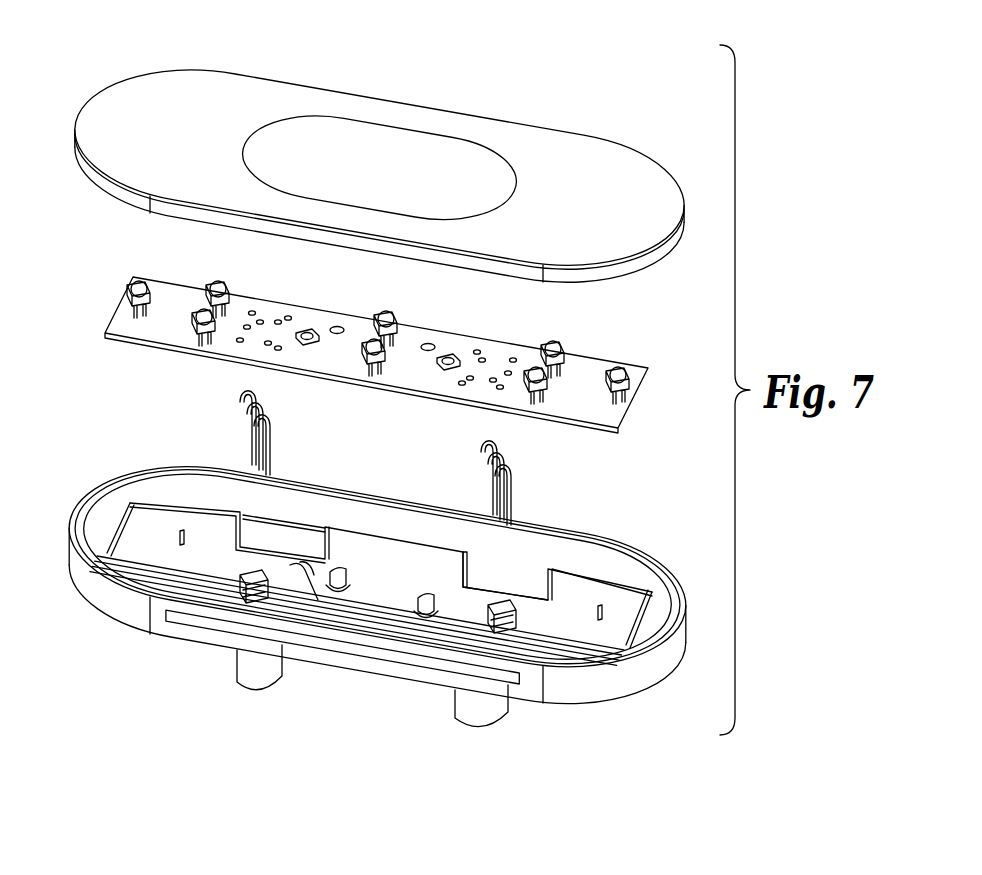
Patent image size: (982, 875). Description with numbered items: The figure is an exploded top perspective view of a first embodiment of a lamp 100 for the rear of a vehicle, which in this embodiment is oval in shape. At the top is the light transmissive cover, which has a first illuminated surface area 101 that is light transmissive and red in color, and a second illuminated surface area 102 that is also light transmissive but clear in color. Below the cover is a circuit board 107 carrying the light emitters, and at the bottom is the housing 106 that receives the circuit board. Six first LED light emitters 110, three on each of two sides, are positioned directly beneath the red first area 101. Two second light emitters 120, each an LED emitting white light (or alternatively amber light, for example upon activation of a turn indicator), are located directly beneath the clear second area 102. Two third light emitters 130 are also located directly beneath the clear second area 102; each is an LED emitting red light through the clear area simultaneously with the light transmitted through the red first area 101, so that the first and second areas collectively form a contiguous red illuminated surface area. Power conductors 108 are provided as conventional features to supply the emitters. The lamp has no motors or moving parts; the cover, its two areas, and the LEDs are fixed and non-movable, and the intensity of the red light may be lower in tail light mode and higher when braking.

The lamp 100 is at (533, 84).
The first illuminated surface area 101 is at (180, 139).
The second illuminated surface area 102 is at (389, 179).
The housing 106 is at (375, 665).
The circuit board 107 is at (605, 416).
The power conductors 108 is at (236, 415).
The first LED light emitter 110 is at (216, 284).
The second light emitter 120 is at (305, 328).
The third light emitter 130 is at (392, 316).